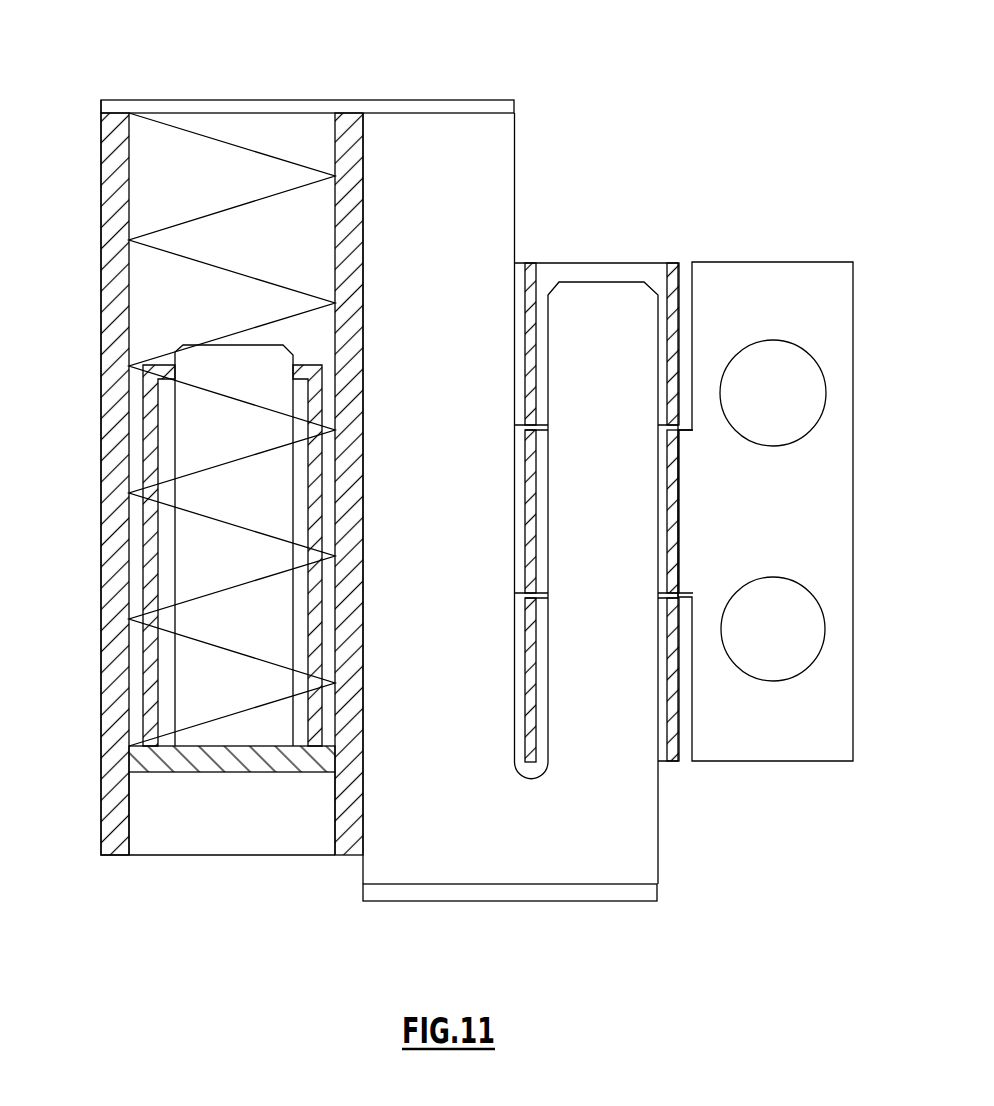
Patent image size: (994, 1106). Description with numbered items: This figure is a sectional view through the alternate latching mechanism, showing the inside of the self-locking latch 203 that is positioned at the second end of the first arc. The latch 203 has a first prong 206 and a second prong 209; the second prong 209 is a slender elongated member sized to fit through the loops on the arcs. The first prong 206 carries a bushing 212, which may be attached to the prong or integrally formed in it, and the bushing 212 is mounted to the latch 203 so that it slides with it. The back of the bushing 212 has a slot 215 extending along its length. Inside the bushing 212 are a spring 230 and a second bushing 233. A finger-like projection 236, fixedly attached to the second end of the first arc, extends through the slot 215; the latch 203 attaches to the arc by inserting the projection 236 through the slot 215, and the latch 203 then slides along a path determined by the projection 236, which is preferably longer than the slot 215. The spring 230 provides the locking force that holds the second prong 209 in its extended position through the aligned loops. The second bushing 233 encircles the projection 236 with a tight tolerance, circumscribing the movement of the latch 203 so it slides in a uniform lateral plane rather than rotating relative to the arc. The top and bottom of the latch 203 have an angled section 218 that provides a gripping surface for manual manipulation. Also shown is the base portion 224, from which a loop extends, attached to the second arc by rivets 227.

The self-locking latch 203 is at (104, 66).
The first prong 206 is at (480, 200).
The second prong 209 is at (600, 762).
The bushing 212 is at (112, 808).
The slot 215 is at (309, 637).
The angled section 218 is at (424, 103).
The base portion 224 is at (745, 732).
The rivets 227 is at (770, 357).
The spring 230 is at (228, 148).
The second bushing 233 is at (150, 714).
The finger-like projection 236 is at (187, 460).